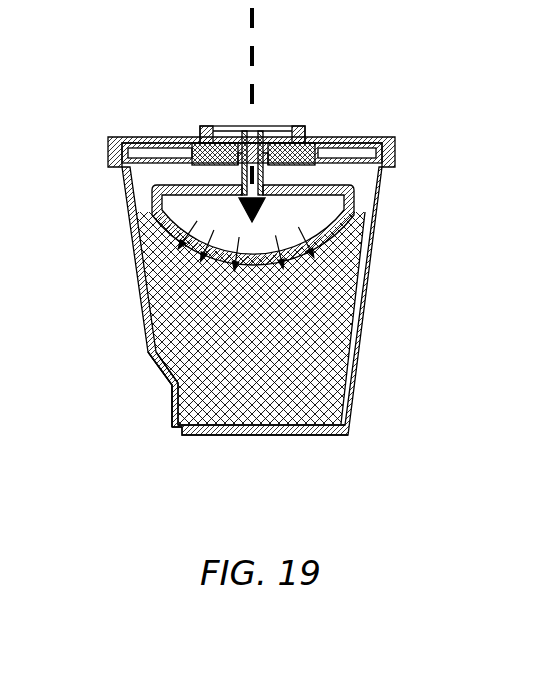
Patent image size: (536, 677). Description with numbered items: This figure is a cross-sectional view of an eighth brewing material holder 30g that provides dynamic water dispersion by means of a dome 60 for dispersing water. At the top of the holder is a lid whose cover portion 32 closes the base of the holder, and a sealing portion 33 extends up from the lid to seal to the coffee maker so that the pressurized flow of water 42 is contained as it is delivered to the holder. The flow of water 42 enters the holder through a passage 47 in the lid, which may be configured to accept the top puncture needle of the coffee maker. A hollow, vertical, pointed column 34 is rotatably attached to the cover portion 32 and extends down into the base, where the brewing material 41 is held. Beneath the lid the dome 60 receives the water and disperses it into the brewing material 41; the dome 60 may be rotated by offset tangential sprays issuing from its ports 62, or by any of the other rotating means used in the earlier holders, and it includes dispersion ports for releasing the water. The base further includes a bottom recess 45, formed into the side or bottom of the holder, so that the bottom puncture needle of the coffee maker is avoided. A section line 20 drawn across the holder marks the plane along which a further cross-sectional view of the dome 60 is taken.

The section line 20- 20 is at (435, 212).
The eighth brewing material holder 30g is at (207, 292).
The cover portion 32 is at (343, 137).
The sealing portion 33 is at (298, 127).
The column 34 is at (243, 387).
The brewing material 41 is at (178, 357).
The flow of water 42 is at (252, 88).
The bottom recess 45 is at (152, 405).
The passage 47 is at (245, 153).
The dome 60 is at (168, 190).
The ports 62 is at (160, 183).